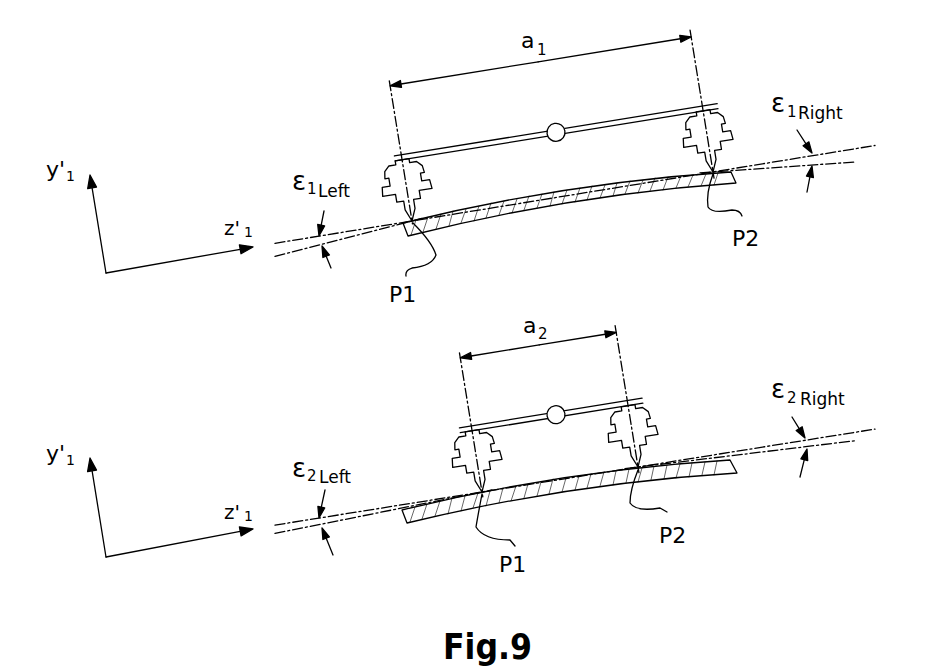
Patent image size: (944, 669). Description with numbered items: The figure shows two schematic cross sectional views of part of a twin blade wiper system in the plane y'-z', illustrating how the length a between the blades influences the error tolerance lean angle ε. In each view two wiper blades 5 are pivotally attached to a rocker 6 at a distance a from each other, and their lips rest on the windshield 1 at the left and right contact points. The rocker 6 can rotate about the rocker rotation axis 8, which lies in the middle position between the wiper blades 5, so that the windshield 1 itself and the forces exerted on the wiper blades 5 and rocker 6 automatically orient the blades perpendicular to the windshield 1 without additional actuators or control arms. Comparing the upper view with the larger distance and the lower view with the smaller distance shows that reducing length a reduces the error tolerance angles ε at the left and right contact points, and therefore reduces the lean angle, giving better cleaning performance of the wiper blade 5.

The windshield 1 is at (540, 207).
The wiper blade 5 is at (398, 158).
The rocker 6 is at (458, 157).
The rocker rotation axis 8 is at (557, 125).